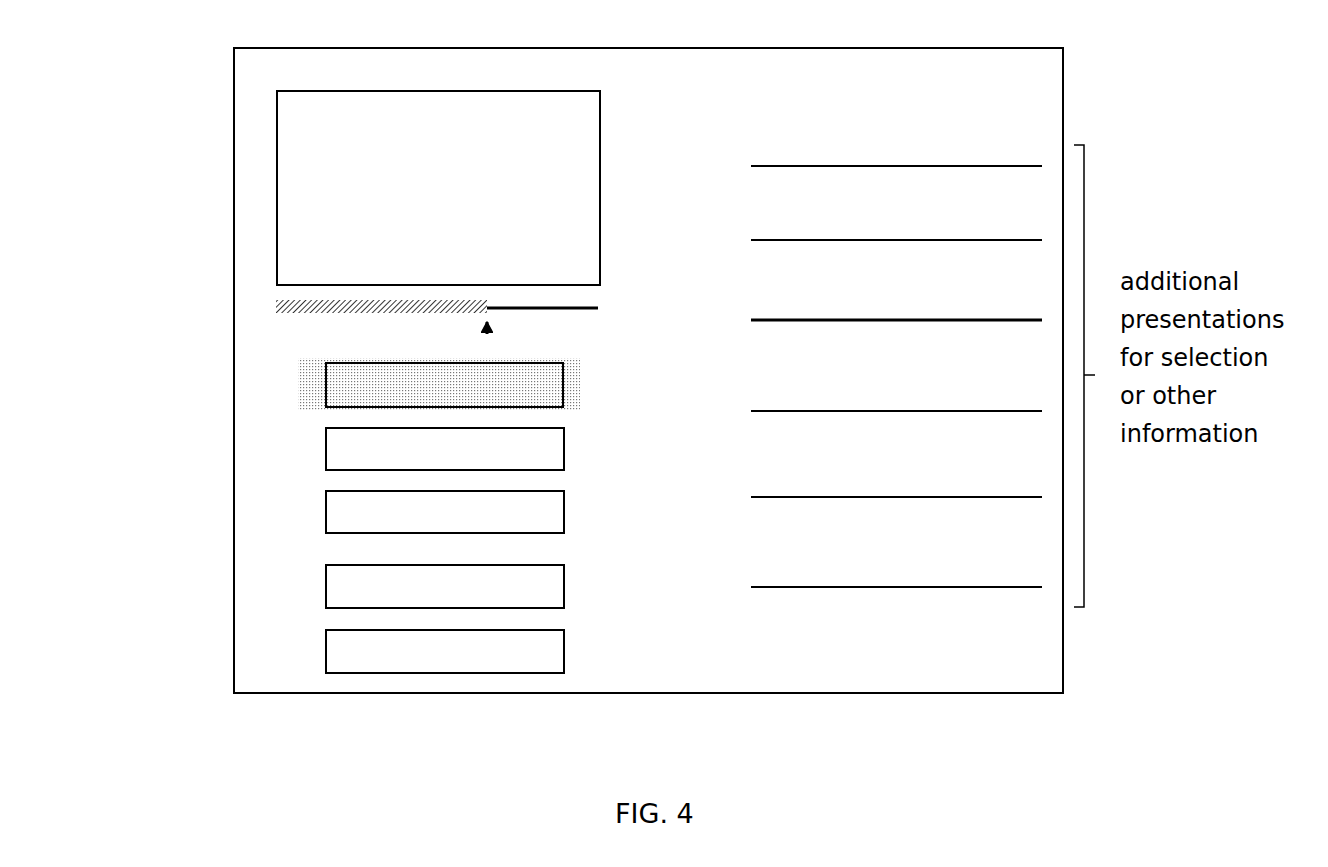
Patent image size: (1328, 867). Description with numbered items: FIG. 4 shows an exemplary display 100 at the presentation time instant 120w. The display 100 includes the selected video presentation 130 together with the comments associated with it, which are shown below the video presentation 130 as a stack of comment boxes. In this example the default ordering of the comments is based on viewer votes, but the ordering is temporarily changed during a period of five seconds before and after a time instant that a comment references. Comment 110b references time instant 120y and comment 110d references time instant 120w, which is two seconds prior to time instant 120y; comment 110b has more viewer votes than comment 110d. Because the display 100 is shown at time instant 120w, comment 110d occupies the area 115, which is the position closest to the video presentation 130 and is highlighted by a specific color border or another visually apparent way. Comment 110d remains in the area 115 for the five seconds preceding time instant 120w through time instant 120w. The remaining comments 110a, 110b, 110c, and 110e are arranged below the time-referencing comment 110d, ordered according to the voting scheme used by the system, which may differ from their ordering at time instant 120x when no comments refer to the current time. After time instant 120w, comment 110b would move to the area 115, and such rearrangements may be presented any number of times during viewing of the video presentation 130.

The display 100 is at (205, 33).
The video presentation 130 is at (438, 188).
The comment 110a is at (445, 449).
The comment 110b is at (445, 512).
The comment 110c is at (445, 586).
The comment 110d is at (444, 385).
The comment 110e is at (445, 651).
The area 115 is at (308, 404).
The time instant 120x is at (445, 322).
The time instant 120y is at (503, 320).
The time instant 120w is at (487, 334).